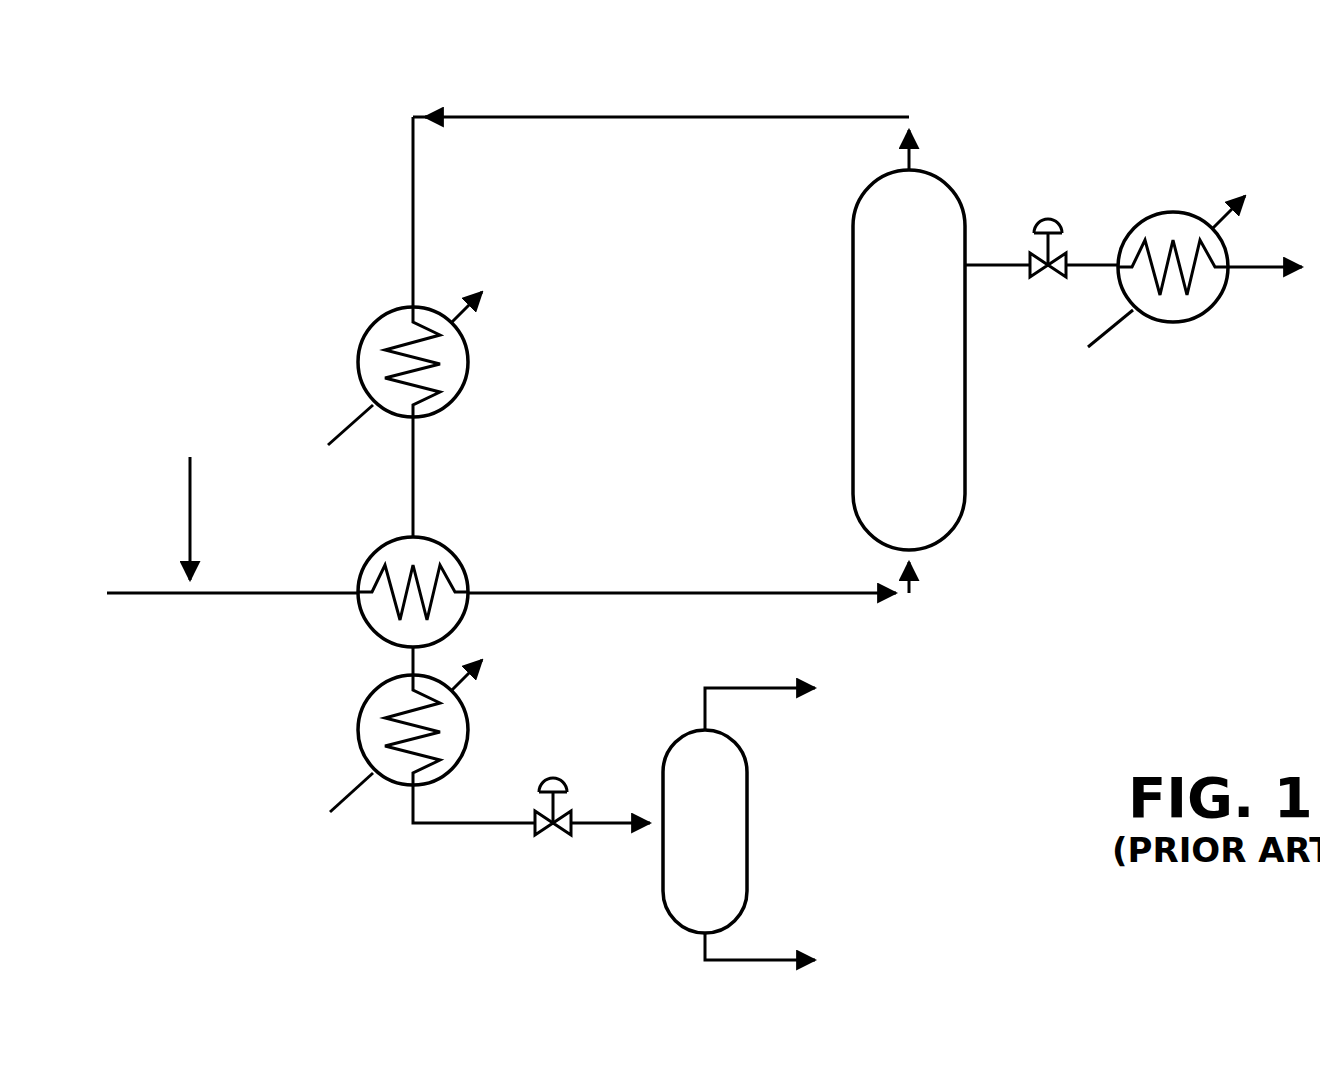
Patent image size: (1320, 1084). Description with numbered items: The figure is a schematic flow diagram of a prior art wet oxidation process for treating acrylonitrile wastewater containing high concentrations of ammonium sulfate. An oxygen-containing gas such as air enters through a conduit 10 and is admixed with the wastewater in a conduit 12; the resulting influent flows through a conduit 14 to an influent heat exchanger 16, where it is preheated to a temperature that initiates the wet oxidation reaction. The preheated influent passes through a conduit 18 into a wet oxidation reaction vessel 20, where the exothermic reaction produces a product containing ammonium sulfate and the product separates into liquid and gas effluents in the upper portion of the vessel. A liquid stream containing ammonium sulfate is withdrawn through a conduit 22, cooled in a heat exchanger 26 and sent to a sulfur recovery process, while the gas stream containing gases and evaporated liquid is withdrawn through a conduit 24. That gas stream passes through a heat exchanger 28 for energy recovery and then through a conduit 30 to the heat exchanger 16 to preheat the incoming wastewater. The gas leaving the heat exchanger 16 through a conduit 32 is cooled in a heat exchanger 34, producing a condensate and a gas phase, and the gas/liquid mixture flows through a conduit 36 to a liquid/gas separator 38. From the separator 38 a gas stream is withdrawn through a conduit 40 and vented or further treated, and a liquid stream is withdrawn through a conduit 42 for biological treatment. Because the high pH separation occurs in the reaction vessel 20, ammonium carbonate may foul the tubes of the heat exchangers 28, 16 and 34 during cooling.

The conduit 10 is at (190, 490).
The conduit 12 is at (168, 595).
The conduit 14 is at (303, 595).
The heat exchanger 16 is at (462, 557).
The conduit 18 is at (745, 593).
The wet oxidation reaction vessel 20 is at (966, 405).
The conduit 22 is at (1005, 265).
The conduit 24 is at (909, 158).
The heat exchanger 26 is at (1163, 212).
The heat exchanger 28 is at (362, 335).
The conduit 30 is at (413, 488).
The conduit 32 is at (413, 657).
The heat exchanger 34 is at (468, 720).
The conduit 36 is at (497, 825).
The liquid/gas separator 38 is at (749, 822).
The conduit 40 is at (762, 688).
The conduit 42 is at (762, 960).